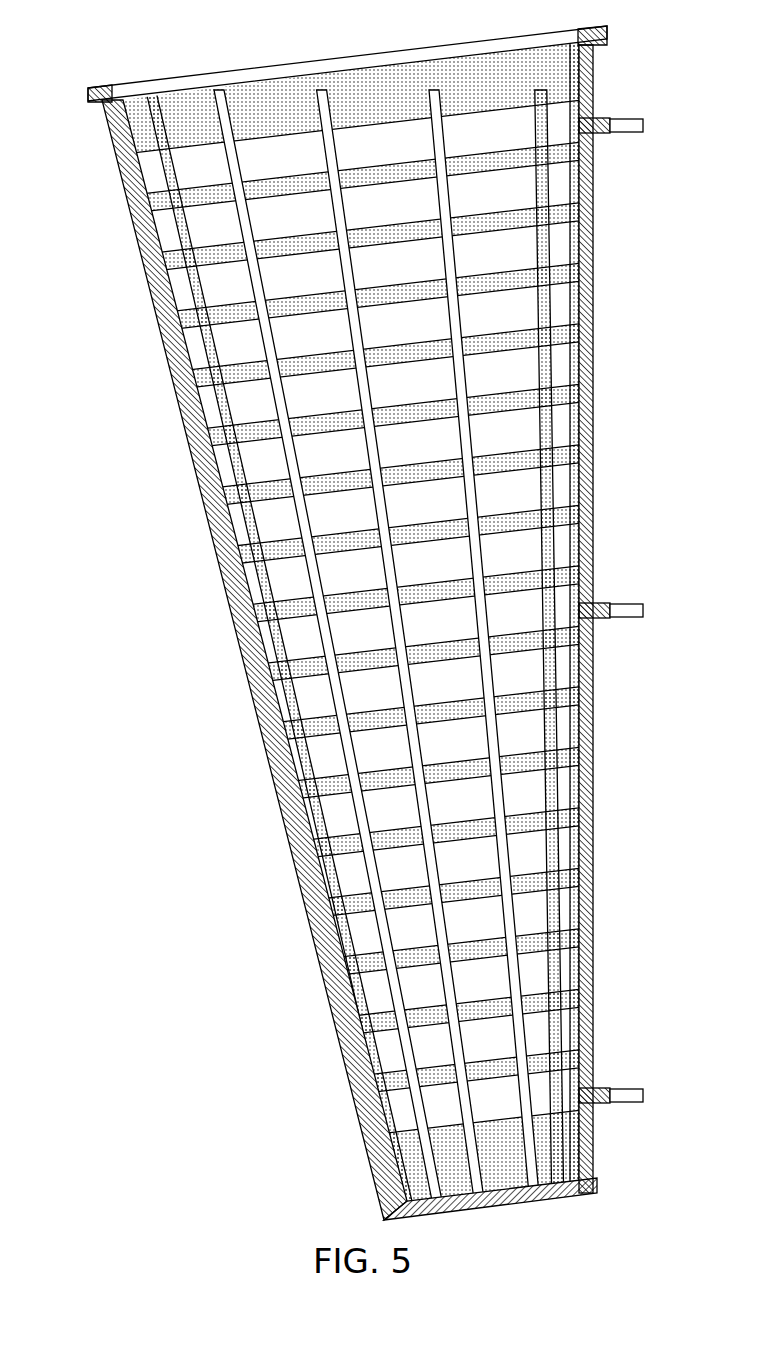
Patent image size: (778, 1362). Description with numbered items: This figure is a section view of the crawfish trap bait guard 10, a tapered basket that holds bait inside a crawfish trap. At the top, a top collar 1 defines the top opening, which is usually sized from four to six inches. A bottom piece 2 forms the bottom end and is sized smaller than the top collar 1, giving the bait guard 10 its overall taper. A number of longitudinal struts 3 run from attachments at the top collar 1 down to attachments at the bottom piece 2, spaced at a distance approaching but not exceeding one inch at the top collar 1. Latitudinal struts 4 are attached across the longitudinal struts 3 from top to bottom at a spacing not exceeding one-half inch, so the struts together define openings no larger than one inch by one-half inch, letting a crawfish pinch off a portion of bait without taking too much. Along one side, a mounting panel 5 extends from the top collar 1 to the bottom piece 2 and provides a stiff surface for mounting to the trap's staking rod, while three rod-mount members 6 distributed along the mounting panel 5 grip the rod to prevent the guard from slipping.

The crawfish trap bait guard 10 is at (84, 33).
The top collar 1 is at (246, 78).
The bottom piece 2 is at (598, 1193).
The longitudinal struts 3 is at (182, 384).
The latitudinal struts 4 is at (190, 444).
The mounting panel 5 is at (595, 332).
The rod-mount members 6 is at (632, 122).